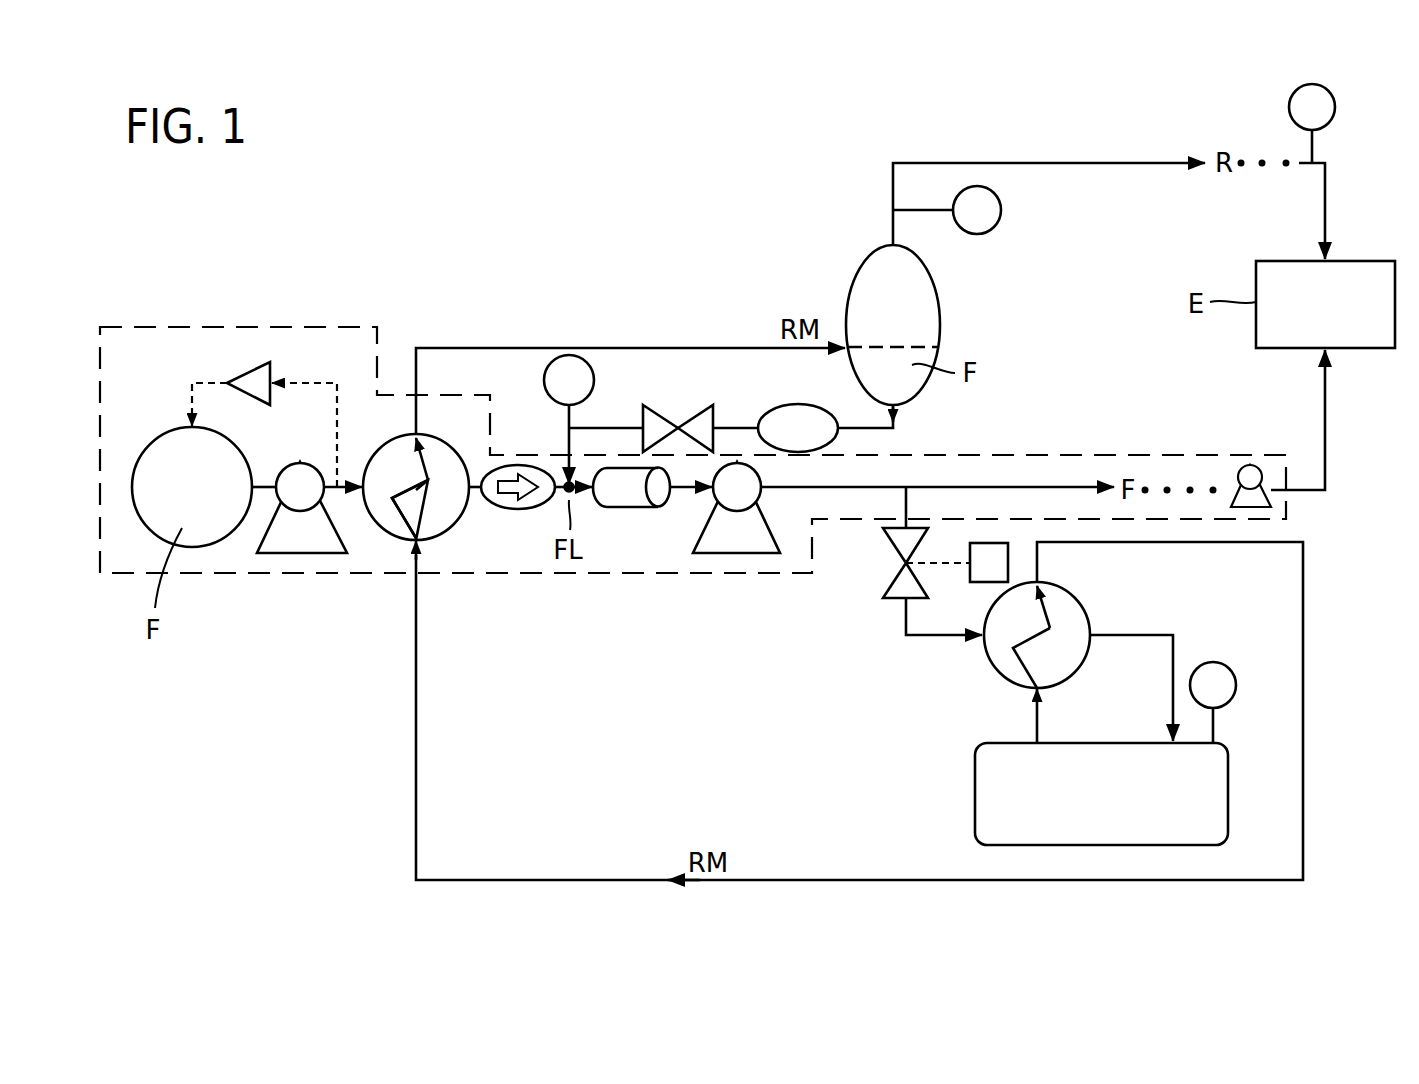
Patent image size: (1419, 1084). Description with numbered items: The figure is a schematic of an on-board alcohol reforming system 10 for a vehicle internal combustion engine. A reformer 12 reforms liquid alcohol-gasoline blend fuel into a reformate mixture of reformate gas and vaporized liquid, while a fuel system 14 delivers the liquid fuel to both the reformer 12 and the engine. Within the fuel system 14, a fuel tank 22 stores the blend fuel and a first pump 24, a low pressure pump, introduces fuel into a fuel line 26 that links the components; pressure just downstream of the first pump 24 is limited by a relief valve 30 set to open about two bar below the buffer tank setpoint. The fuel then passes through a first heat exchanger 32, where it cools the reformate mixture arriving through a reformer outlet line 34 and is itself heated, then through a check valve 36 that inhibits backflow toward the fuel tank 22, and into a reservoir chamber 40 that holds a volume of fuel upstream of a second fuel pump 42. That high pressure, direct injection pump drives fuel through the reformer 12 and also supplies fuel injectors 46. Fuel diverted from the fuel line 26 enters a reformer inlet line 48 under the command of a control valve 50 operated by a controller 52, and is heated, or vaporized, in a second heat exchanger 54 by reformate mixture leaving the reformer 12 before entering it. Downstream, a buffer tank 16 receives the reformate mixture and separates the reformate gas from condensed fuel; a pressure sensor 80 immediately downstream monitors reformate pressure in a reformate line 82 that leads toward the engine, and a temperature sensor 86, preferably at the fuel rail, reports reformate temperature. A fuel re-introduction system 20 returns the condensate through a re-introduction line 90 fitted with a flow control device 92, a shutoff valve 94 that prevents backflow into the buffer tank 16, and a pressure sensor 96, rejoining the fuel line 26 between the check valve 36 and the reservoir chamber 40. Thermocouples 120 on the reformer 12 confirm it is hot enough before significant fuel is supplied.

The alcohol reforming system 10 is at (610, 200).
The reformer 12 is at (973, 790).
The fuel system 14 is at (540, 580).
The buffer tank 16 is at (944, 297).
The fuel re-introduction system 20 is at (718, 372).
The fuel tank 22 is at (218, 542).
The first pump 24 is at (340, 535).
The fuel line 26 is at (973, 487).
The relief valve 30 is at (250, 367).
The first heat exchanger 32 is at (440, 437).
The reformer outlet line 34 is at (447, 882).
The check valve 36 is at (518, 510).
The reservoir chamber 40 is at (642, 507).
The second fuel pump 42 is at (780, 537).
The fuel injectors 46 is at (1275, 500).
The reformer inlet line 48 is at (952, 640).
The control valve 50 is at (887, 580).
The controller 52 is at (965, 578).
The second heat exchanger 54 is at (1080, 600).
The pressure sensor 80 is at (1001, 210).
The reformate line 82 is at (955, 163).
The temperature sensor 86 is at (1337, 100).
The re-introduction line 90 is at (607, 428).
The flow control device 92 is at (776, 399).
The valve 94 is at (657, 407).
The pressure sensor 96 is at (569, 355).
The thermocouples 120 is at (1220, 662).